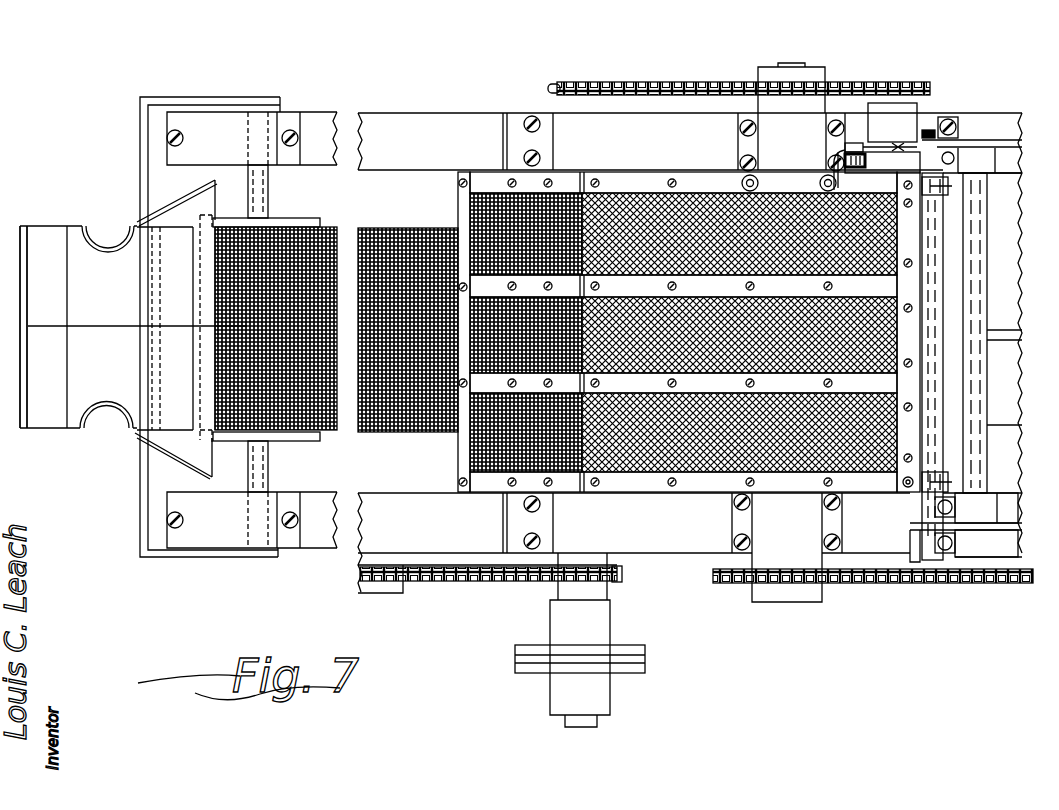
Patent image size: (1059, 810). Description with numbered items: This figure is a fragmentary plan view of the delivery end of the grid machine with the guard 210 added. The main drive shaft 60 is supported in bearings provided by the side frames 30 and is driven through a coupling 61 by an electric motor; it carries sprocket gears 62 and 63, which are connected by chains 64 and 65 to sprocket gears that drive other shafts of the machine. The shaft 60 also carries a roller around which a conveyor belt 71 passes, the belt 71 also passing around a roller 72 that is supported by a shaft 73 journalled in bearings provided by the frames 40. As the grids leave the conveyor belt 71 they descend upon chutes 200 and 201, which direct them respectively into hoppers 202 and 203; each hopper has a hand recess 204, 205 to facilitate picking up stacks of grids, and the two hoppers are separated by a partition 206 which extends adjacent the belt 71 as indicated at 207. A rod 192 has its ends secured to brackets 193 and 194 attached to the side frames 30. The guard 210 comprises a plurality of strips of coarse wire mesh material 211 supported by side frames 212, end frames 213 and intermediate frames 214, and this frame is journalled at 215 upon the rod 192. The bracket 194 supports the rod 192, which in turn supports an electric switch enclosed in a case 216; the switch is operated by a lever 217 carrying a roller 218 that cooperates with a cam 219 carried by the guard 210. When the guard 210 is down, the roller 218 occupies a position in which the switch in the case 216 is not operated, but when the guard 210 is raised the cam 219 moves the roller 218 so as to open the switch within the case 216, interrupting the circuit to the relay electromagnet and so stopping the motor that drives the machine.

The frame 30 is at (652, 555).
The frame 40 is at (430, 115).
The main drive shaft 60 is at (560, 590).
The coupling 61 is at (640, 660).
The sprocket gear 62 is at (557, 88).
The sprocket gear 63 is at (617, 578).
The chain 64 is at (645, 84).
The chain 65 is at (445, 583).
The conveyor belt 71 is at (380, 235).
The roller 72 is at (300, 440).
The shaft 73 is at (272, 190).
The rod 192 is at (930, 240).
The bracket 193 is at (965, 530).
The bracket 194 is at (962, 145).
The chute 200 is at (197, 452).
The chute 201 is at (198, 195).
The hopper 202 is at (48, 418).
The hopper 203 is at (77, 237).
The hand recess 204 is at (107, 420).
The hand recess 205 is at (109, 245).
The partition 206 is at (105, 325).
The partition extension 207 is at (247, 330).
The guard 210 is at (696, 180).
The coarse wire mesh material 211 is at (620, 205).
The side frame 212 is at (480, 177).
The end frame 213 is at (448, 452).
The intermediate frame 214 is at (478, 283).
The journal 215 is at (935, 186).
The case 216 is at (895, 118).
The lever 217 is at (872, 150).
The roller 218 is at (848, 150).
The cam 219 is at (923, 165).